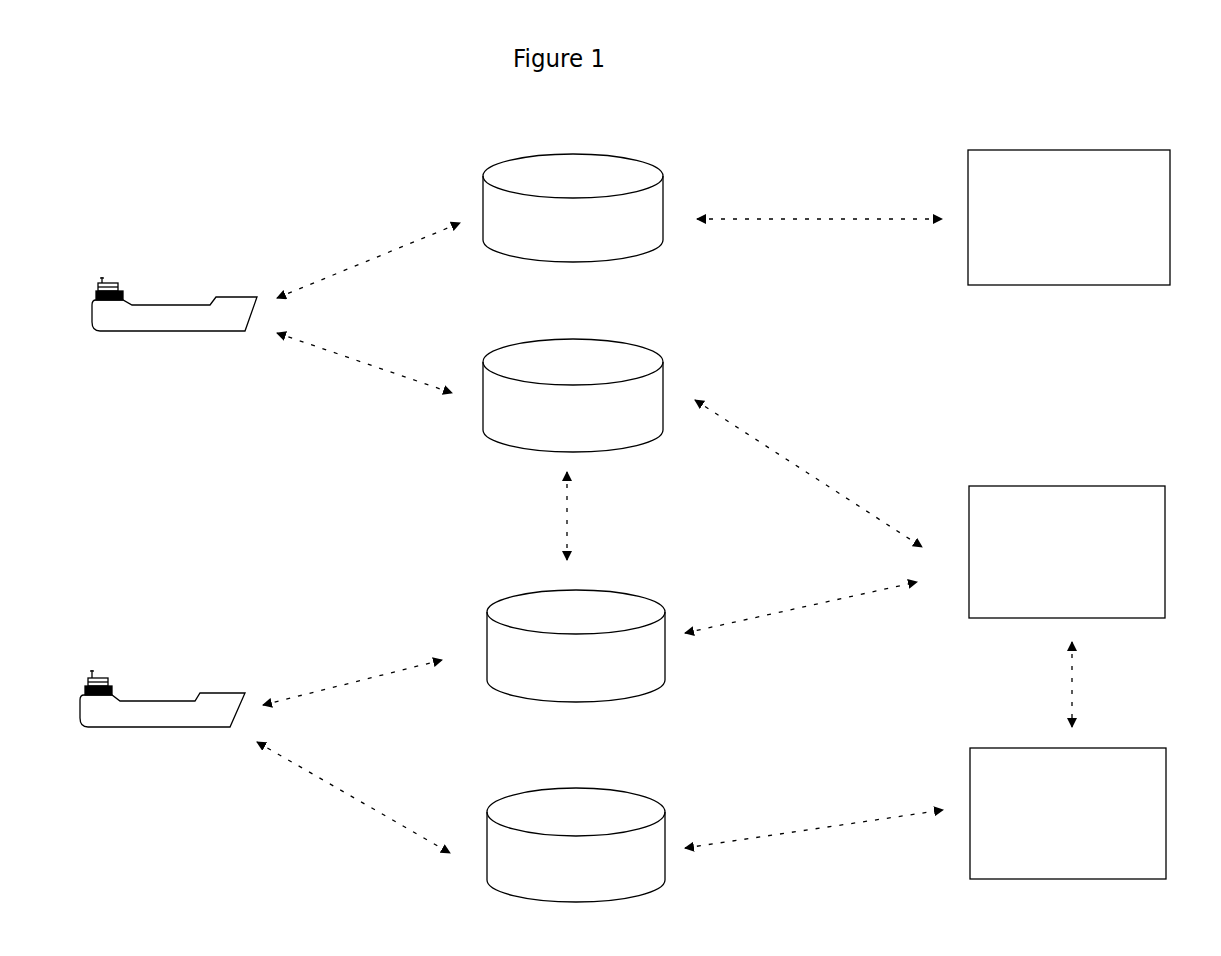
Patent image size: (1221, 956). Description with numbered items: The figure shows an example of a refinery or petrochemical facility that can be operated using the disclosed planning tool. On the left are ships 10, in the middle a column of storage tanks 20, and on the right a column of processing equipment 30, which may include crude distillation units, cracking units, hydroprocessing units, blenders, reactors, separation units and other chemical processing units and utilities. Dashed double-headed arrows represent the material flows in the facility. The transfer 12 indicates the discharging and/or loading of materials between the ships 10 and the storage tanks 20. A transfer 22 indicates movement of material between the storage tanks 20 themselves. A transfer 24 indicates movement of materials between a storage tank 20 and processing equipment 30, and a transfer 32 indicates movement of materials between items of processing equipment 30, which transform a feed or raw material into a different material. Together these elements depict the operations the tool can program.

The ship 10 is at (170, 332).
The transfer 12 is at (368, 260).
The storage tank 20 is at (573, 208).
The transfer 22 is at (586, 516).
The transfer 24 is at (819, 205).
The processing equipment 30 is at (1069, 217).
The transfer 32 is at (1091, 684).